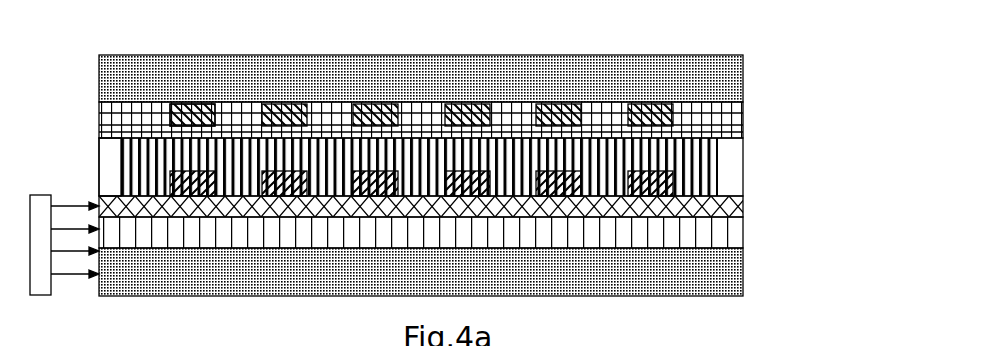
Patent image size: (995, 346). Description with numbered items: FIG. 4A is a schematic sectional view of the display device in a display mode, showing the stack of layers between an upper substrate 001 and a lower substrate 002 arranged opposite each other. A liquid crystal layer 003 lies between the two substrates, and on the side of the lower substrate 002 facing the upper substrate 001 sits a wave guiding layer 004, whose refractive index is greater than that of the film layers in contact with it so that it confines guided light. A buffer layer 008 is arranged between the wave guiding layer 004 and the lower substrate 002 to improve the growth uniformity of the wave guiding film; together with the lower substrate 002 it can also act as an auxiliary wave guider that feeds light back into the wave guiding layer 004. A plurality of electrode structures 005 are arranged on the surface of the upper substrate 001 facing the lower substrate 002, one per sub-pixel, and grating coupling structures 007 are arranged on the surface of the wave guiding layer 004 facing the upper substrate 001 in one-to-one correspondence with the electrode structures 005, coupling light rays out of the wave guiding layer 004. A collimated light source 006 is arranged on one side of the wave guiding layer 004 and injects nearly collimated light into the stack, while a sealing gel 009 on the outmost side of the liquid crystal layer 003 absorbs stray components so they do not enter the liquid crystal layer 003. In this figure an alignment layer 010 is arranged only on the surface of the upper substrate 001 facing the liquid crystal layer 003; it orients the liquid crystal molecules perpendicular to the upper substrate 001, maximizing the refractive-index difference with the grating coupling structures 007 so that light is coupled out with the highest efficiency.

The upper substrate 001 is at (735, 74).
The lower substrate 002 is at (735, 268).
The liquid crystal layer 003 is at (708, 152).
The wave guiding layer 004 is at (735, 200).
The electrode structures 005 is at (717, 107).
The collimated light source 006 is at (40, 195).
The grating coupling structures 007 is at (700, 173).
The buffer layer 008 is at (722, 229).
The sealing gel 009 is at (105, 150).
The alignment layer 010 is at (722, 125).